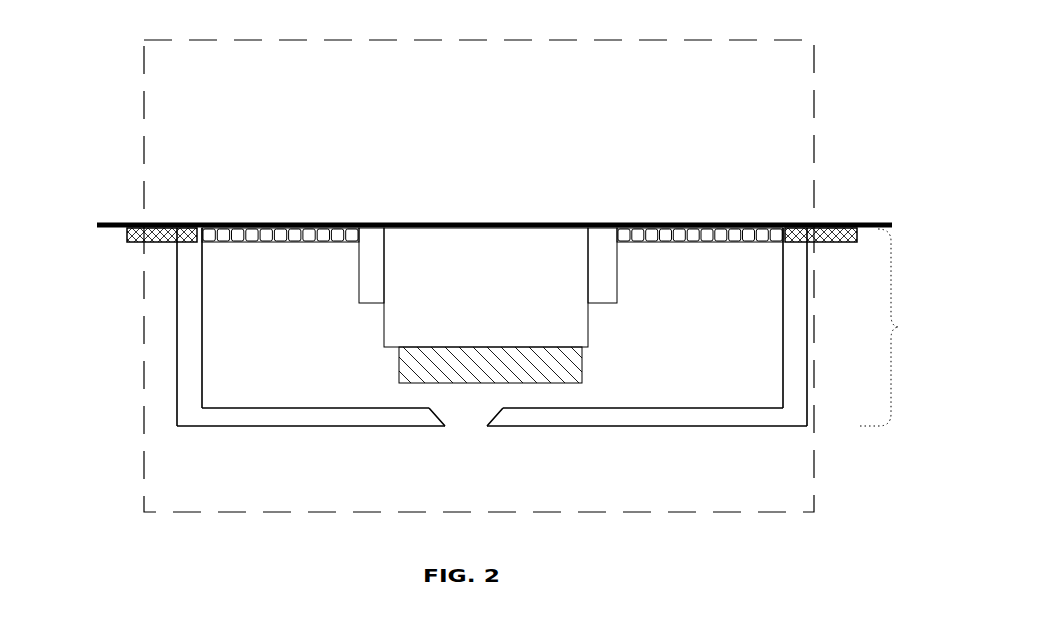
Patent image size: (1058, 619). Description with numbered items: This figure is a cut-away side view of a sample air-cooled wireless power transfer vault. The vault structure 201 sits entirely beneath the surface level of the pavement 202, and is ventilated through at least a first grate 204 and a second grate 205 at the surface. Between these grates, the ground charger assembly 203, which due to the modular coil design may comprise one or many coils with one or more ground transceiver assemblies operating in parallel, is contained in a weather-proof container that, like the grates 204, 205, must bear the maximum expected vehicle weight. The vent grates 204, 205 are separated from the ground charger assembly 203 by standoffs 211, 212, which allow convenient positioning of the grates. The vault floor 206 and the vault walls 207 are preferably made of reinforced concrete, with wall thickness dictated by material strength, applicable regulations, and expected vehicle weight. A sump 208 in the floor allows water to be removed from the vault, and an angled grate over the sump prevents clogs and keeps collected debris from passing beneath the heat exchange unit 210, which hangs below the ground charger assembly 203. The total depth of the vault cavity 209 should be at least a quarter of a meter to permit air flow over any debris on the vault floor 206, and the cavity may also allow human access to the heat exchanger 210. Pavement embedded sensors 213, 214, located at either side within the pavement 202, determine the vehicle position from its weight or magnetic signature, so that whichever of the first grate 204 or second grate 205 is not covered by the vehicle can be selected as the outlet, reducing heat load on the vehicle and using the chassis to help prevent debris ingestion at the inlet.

The vault structure 201 is at (479, 276).
The pavement 202 is at (113, 221).
The ground charger assembly 203 is at (487, 285).
The first grate 204 is at (706, 222).
The second grate 205 is at (288, 220).
The vault floor 206 is at (349, 429).
The vault walls 207 is at (176, 369).
The sump 208 is at (462, 429).
The vault cavity 209 is at (900, 327).
The heat exchange unit 210 is at (585, 362).
The standoff 211 is at (371, 246).
The standoff 212 is at (598, 247).
The pavement embedded sensor 213 is at (165, 244).
The pavement embedded sensor 214 is at (825, 224).